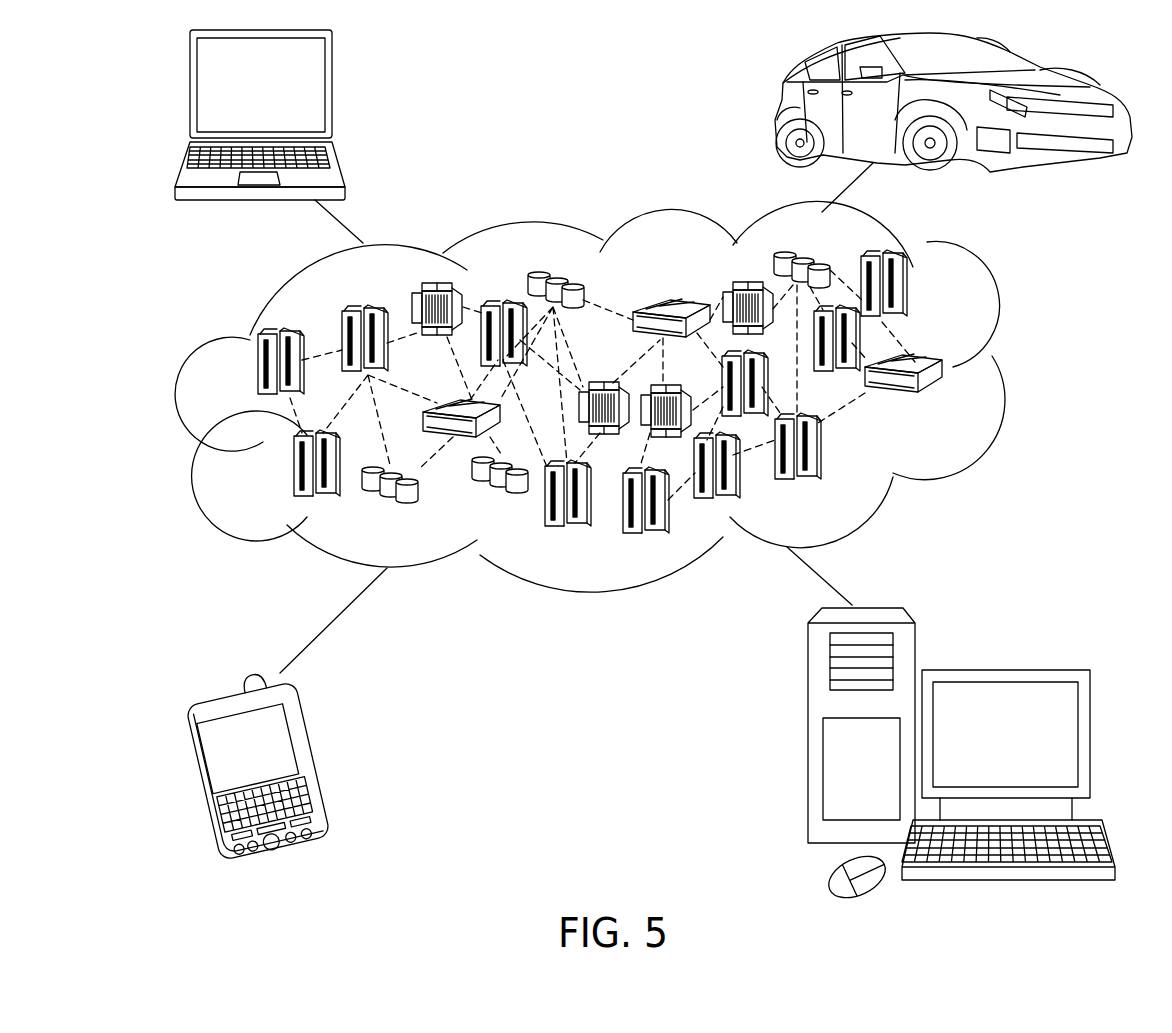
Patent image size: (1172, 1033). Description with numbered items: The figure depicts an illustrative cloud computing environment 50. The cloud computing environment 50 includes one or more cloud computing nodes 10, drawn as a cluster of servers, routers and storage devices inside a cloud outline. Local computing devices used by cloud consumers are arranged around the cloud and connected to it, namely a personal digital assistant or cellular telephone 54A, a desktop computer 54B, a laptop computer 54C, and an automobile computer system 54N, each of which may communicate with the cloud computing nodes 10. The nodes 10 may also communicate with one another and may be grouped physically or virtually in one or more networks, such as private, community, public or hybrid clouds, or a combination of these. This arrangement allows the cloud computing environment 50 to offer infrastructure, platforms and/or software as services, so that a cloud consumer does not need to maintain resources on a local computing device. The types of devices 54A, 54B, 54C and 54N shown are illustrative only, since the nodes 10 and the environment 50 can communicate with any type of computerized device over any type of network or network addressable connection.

The cloud computing environment 50 is at (1003, 372).
The cloud computing nodes 10 is at (950, 403).
The personal digital assistant or cellular telephone 54A is at (323, 763).
The desktop computer 54B is at (1003, 668).
The laptop computer 54C is at (332, 92).
The automobile computer system 54N is at (780, 108).